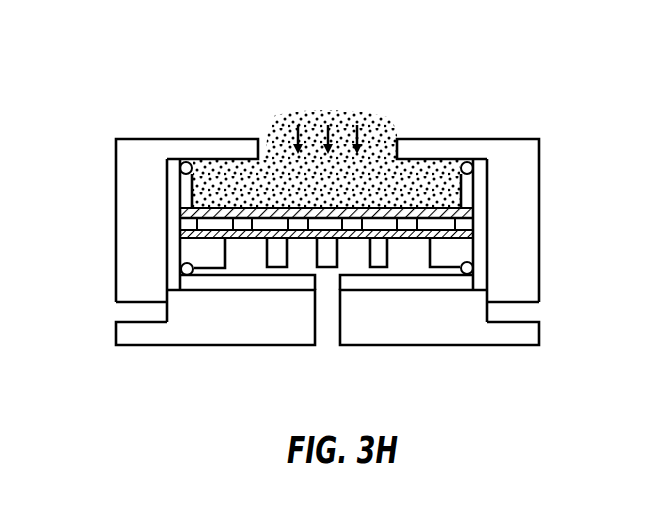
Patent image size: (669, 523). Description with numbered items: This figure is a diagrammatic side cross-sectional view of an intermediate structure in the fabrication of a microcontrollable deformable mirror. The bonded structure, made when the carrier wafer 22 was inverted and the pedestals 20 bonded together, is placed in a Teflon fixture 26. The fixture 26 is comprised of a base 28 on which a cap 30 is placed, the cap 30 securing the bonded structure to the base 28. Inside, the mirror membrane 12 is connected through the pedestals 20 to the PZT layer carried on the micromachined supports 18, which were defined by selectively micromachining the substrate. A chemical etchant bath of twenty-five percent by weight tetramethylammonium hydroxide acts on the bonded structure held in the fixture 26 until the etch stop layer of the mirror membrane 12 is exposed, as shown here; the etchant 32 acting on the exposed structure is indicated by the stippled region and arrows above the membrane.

The fixture 26 is at (473, 52).
The plasma / process gas 32 is at (267, 140).
The cap 30 is at (116, 166).
The pedestal 20 is at (180, 224).
The carrier wafer 22 is at (479, 187).
The mirror membrane 12 is at (487, 213).
The support 18 is at (477, 258).
The base 28 is at (423, 298).